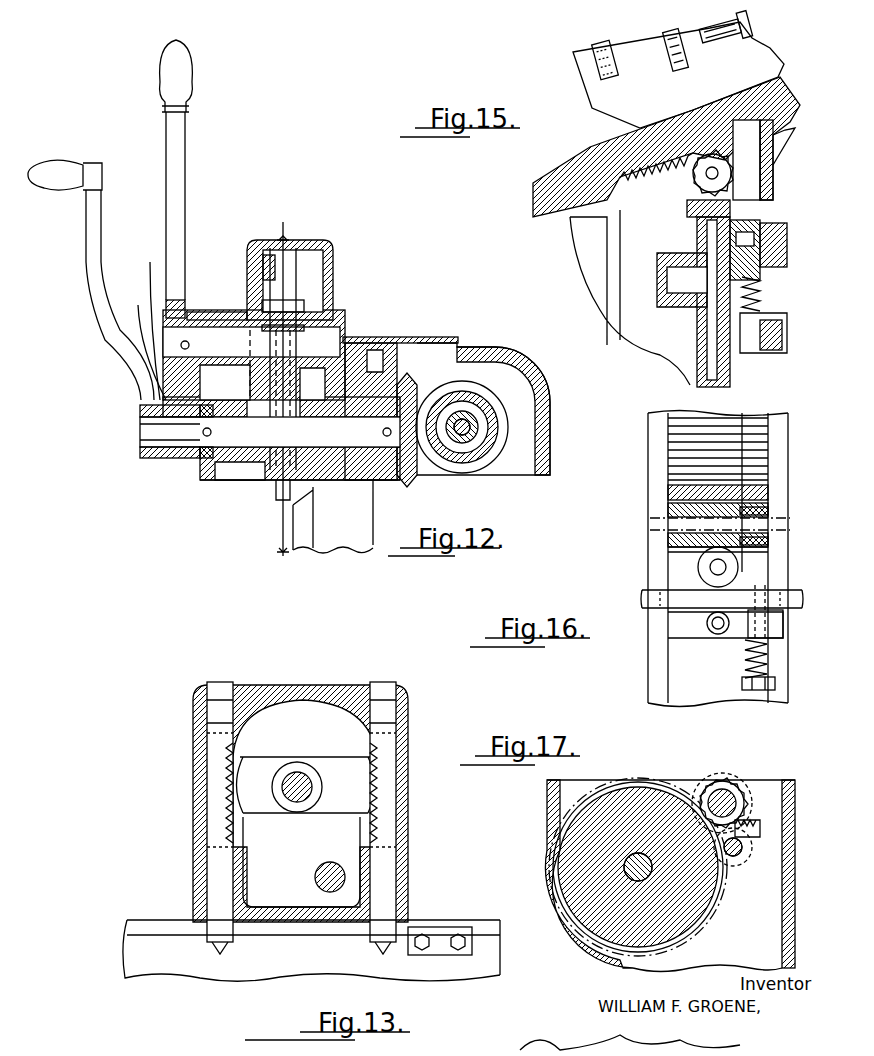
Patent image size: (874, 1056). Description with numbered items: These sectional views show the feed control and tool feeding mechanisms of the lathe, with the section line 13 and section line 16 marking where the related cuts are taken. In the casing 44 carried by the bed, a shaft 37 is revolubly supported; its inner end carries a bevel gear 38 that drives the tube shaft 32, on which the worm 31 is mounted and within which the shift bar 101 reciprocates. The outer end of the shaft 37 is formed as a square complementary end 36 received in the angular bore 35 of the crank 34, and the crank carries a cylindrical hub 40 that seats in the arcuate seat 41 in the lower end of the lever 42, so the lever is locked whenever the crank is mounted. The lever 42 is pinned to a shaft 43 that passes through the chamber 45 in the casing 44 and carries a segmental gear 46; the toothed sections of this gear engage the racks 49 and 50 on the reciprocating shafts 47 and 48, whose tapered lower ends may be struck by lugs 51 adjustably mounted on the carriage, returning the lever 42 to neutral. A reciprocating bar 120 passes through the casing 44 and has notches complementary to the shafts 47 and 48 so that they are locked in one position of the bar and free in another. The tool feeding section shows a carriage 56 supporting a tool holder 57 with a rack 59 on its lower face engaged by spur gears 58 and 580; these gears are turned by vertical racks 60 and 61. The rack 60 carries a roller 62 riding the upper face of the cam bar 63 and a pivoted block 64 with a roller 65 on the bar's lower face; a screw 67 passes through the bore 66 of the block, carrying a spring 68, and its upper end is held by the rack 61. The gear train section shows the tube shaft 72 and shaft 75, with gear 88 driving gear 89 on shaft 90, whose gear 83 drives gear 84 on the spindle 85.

In FIG. 12, the lever 42 is at (170, 84).
In FIG. 12, the crank 34 is at (92, 292).
In FIG. 12, the shaft 43 is at (149, 321).
In FIG. 12, the arcuate seat 41 is at (142, 343).
In FIG. 12, the reciprocating bar 120 is at (217, 281).
In FIG. 12, the casing 44 is at (335, 312).
In FIG. 13, the casing 44 is at (408, 716).
In FIG. 12, the chamber 45 is at (318, 270).
In FIG. 12, the segmental gear 46 is at (288, 290).
In FIG. 12, the section line 13 is at (279, 391).
In FIG. 12, the bevel gear 38 is at (408, 375).
In FIG. 12, the tube shaft 32 is at (495, 405).
In FIG. 12, the shift bar 101 is at (478, 425).
In FIG. 12, the worm 31 is at (490, 440).
In FIG. 12, the cylindrical hub 40 is at (180, 458).
In FIG. 12, the complementary end 36 is at (142, 437).
In FIG. 12, the angular bore 35 is at (142, 455).
In FIG. 12, the shaft 37 is at (210, 445).
In FIG. 15, the tool holder 57 is at (778, 100).
In FIG. 15, the carriage 56 is at (780, 150).
In FIG. 15, the rack 61 is at (778, 195).
In FIG. 16, the rack 61 is at (770, 442).
In FIG. 15, the rack 59 is at (690, 178).
In FIG. 15, the spur gear 580 is at (703, 172).
In FIG. 16, the spur gear 580 is at (755, 505).
In FIG. 15, the spur gear 58 is at (700, 182).
In FIG. 16, the spur gear 58 is at (670, 490).
In FIG. 15, the spring 16 is at (745, 305).
In FIG. 16, the rack 60 is at (670, 438).
In FIG. 16, the roller 62 is at (700, 566).
In FIG. 16, the cam bar 63 is at (770, 598).
In FIG. 16, the block 64 is at (672, 628).
In FIG. 16, the roller 65 is at (718, 634).
In FIG. 16, the bore 66 is at (775, 632).
In FIG. 16, the screw 67 is at (742, 684).
In FIG. 16, the spring 68 is at (768, 672).
In FIG. 13, the reciprocating shaft 47 is at (220, 690).
In FIG. 13, the reciprocating shaft 48 is at (382, 690).
In FIG. 13, the rack 49 is at (228, 752).
In FIG. 13, the rack 50 is at (378, 752).
In FIG. 13, the lug 51 is at (442, 928).
In FIG. 17, the gear 83 is at (750, 793).
In FIG. 17, the gear 84 is at (580, 875).
In FIG. 17, the spindle 85 is at (640, 855).
In FIG. 17, the gear 89 is at (720, 778).
In FIG. 17, the shaft 90 is at (730, 790).
In FIG. 17, the tube shaft 72 is at (765, 828).
In FIG. 17, the shaft 75 is at (745, 847).
In FIG. 17, the gear 88 is at (745, 855).